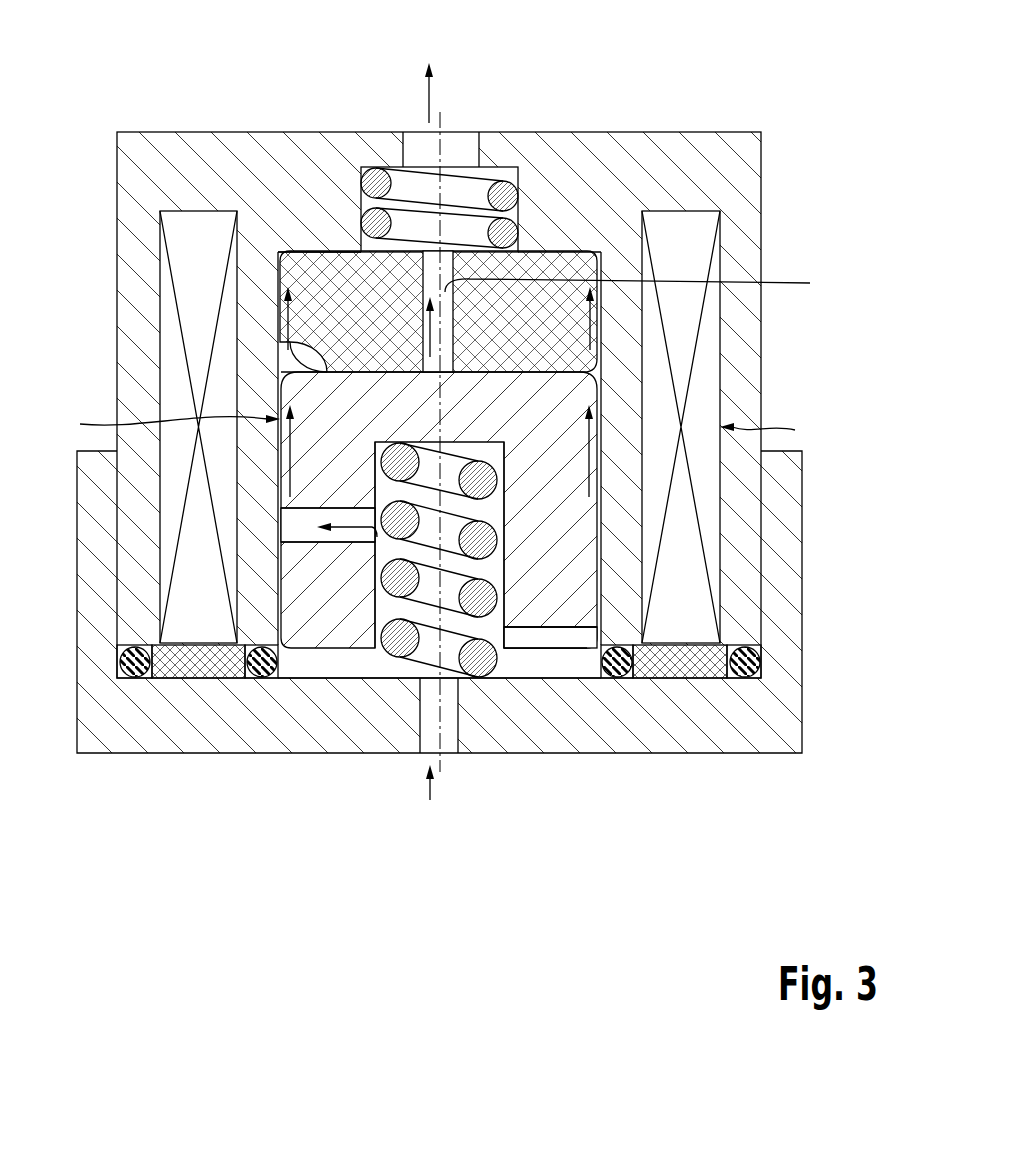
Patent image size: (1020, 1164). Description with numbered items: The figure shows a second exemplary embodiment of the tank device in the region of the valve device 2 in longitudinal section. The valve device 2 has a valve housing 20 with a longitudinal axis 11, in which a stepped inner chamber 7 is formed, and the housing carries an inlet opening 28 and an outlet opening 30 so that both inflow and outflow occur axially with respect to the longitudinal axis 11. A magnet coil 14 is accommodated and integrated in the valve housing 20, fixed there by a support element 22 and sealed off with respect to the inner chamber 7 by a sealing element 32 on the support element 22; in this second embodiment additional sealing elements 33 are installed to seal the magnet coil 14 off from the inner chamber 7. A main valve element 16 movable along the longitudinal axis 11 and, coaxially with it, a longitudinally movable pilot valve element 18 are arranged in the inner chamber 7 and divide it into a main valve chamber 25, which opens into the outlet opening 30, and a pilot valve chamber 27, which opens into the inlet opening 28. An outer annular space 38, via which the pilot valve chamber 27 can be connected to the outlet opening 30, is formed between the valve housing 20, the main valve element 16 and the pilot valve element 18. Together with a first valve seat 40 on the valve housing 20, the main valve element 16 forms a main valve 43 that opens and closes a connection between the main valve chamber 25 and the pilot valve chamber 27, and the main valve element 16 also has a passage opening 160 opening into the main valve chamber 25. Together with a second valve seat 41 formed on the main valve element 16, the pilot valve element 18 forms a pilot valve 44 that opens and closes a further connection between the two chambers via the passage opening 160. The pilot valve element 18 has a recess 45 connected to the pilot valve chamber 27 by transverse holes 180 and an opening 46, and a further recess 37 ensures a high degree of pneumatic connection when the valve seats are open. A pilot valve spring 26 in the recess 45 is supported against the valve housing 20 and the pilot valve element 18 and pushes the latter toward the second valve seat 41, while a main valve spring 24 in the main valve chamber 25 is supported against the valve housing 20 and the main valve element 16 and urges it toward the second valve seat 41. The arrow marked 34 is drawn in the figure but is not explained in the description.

The valve device 2 is at (795, 88).
The inner chamber 7 is at (303, 663).
The longitudinal axis 11 is at (423, 275).
The magnet coil 14 is at (703, 387).
The main valve element 16 is at (560, 327).
The passage opening 160 is at (648, 283).
The pilot valve element 18 is at (570, 488).
The transverse holes 180 is at (297, 527).
The valve housing 20 is at (720, 156).
The support element 22 is at (193, 665).
The main valve spring 24 is at (503, 196).
The main valve chamber 25 is at (455, 210).
The pilot valve spring 26 is at (478, 542).
The pilot valve chamber 27 is at (577, 663).
The inlet opening 28 is at (449, 735).
The outlet opening 30 is at (405, 147).
The sealing element 32 is at (135, 678).
The additional sealing elements 33 is at (262, 678).
The magnetic field direction 34 is at (772, 430).
The further recess 37 is at (523, 648).
The outer annular space 38 is at (285, 372).
The first valve seat 40 is at (305, 252).
The second valve seat 41 is at (290, 343).
The main valve 43 is at (346, 238).
The pilot valve 44 is at (164, 425).
The recess 45 is at (497, 562).
The opening 46 is at (375, 648).